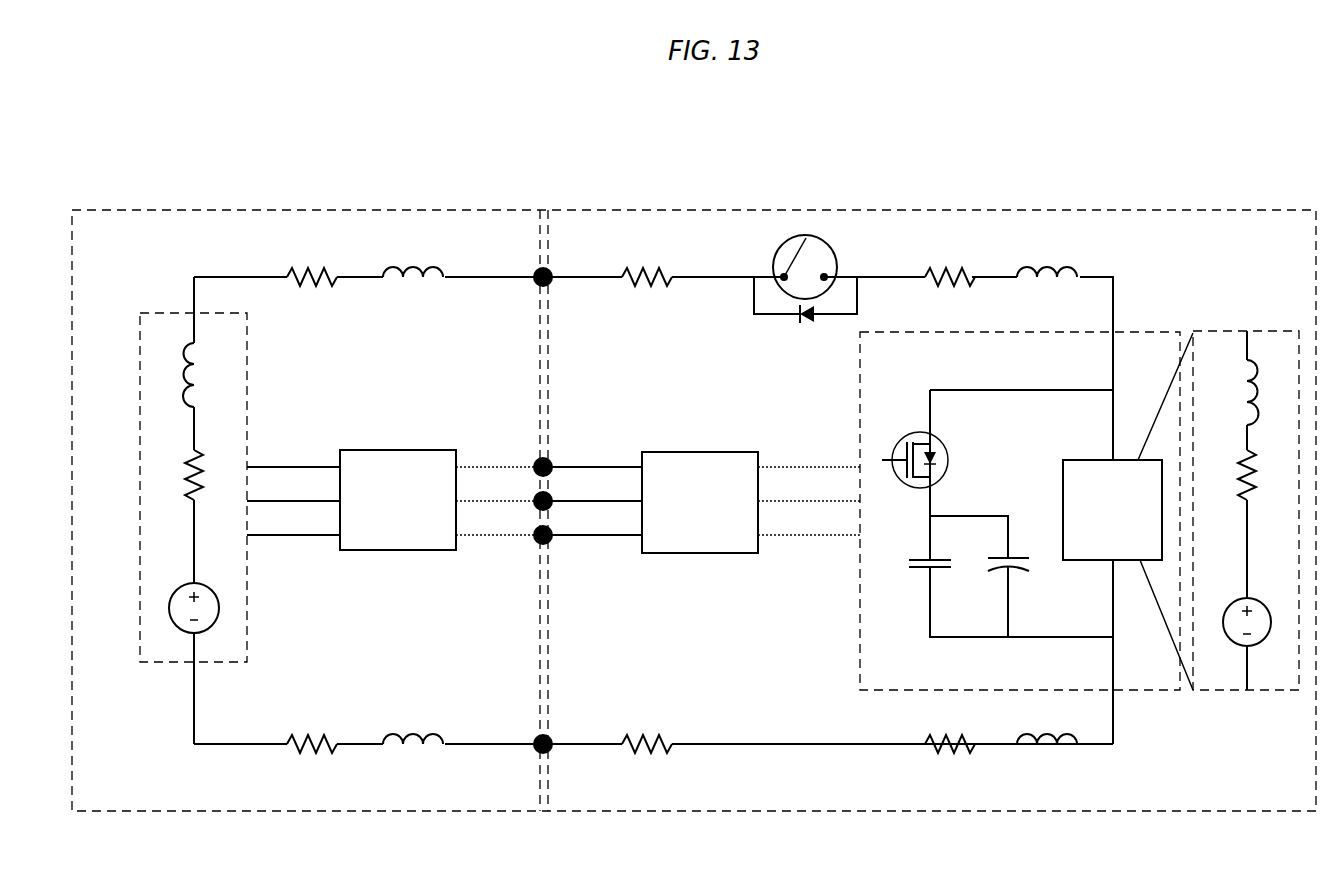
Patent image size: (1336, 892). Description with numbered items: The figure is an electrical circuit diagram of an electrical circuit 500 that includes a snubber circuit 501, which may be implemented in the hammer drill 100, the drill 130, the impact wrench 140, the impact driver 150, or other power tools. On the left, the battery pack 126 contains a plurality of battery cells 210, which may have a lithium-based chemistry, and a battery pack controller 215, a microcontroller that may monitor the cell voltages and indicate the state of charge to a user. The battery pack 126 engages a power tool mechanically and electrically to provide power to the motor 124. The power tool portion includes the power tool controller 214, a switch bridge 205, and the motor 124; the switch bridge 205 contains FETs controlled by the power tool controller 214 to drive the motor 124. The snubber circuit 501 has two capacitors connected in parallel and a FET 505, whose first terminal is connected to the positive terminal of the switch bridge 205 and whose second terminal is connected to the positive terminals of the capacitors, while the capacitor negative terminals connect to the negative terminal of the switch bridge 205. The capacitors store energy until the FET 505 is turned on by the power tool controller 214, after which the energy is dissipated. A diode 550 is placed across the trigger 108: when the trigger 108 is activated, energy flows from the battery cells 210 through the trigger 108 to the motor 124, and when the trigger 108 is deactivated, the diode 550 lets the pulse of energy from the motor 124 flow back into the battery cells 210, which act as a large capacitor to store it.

The electrical circuit 500 is at (386, 126).
The battery pack 126 is at (262, 212).
The battery cells 210 is at (247, 380).
The battery pack controller 215 is at (395, 450).
The hammer drill 100 is at (921, 485).
The drill 130 is at (921, 485).
The impact wrench 140 is at (921, 485).
The impact driver 150 is at (928, 210).
The trigger 108 is at (797, 237).
The diode 550 is at (785, 315).
The power tool controller 214 is at (700, 452).
The snubber circuit 501 is at (860, 412).
The FET 505 is at (930, 487).
The switch bridge 205 is at (1090, 460).
The motor 124 is at (1252, 331).